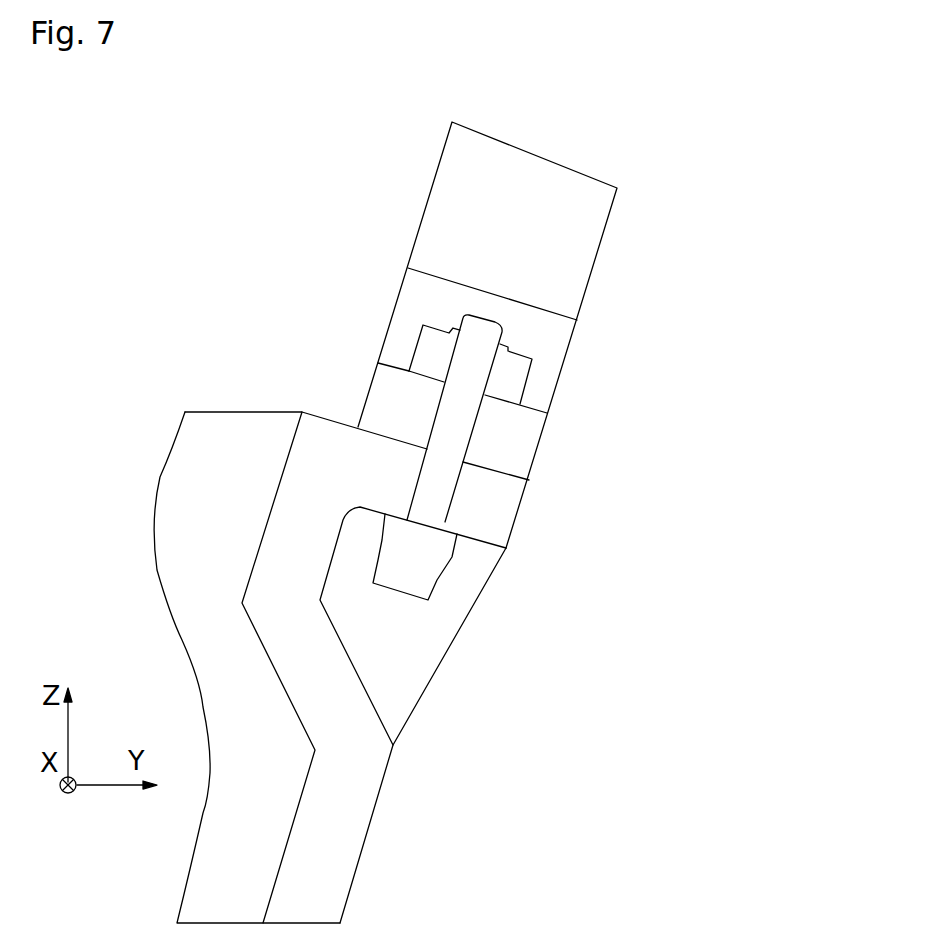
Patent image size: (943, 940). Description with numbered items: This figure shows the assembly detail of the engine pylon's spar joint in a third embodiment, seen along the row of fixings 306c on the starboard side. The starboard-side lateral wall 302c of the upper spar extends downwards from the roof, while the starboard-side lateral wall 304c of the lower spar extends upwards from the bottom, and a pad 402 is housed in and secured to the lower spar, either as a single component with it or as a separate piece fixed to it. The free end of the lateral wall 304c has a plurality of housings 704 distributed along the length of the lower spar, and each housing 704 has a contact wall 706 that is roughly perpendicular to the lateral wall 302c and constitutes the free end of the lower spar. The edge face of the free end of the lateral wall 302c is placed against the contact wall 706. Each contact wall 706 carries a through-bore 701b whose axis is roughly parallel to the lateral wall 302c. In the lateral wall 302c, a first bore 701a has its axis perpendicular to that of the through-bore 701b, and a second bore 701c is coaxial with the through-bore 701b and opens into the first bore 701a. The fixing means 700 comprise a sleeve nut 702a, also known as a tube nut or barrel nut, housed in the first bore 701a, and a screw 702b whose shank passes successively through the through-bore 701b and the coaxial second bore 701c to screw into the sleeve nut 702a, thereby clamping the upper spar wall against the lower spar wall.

The starboard-side lateral wall 302c is at (600, 209).
The starboard-side lateral wall 304c is at (328, 905).
The row of fixings 306c is at (700, 493).
The pad 402 is at (197, 418).
The fixing means 700 is at (610, 732).
The first bore 701a is at (520, 333).
The through-bore 701b is at (455, 480).
The second bore 701c is at (473, 430).
The sleeve nut 702a is at (512, 372).
The screw 702b is at (417, 582).
The housing 704 is at (398, 690).
The contact wall 706 is at (500, 527).